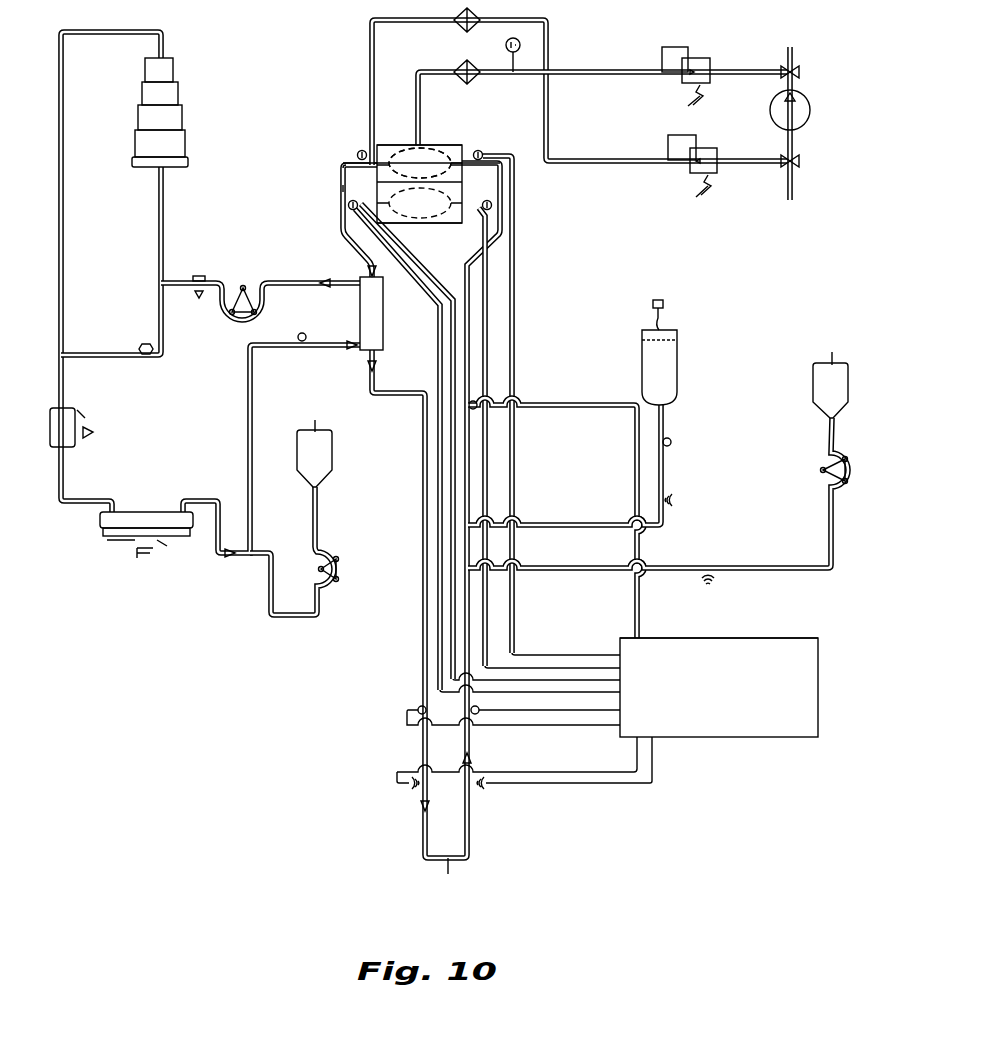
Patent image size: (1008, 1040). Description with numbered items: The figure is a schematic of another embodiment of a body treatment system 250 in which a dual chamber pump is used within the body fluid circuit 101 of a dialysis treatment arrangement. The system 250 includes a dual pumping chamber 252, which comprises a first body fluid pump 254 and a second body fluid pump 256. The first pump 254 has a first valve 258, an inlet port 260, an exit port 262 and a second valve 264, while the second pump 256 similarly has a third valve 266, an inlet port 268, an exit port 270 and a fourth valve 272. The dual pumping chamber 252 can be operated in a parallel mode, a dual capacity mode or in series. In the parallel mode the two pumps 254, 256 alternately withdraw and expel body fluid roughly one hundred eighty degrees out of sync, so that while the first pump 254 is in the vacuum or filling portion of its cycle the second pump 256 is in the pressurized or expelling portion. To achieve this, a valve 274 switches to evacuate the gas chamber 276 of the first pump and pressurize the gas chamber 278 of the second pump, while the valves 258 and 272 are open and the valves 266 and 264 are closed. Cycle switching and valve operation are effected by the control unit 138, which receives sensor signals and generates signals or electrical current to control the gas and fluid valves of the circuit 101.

The body fluid circuit 101 is at (555, 313).
The control unit 138 is at (739, 699).
The body treatment system 250 is at (288, 112).
The dual pumping chamber 252 is at (458, 180).
The first body fluid pump 254 is at (385, 145).
The second body fluid pump 256 is at (391, 225).
The first valve 258 is at (481, 151).
The inlet port 260 is at (468, 152).
The exit port 262 is at (342, 161).
The second valve 264 is at (359, 150).
The third valve 266 is at (493, 210).
The inlet port 268 is at (463, 258).
The exit port 270 is at (348, 206).
The fourth valve 272 is at (345, 188).
The valve 274 is at (548, 70).
The gas chamber 276 is at (450, 172).
The gas chamber 278 is at (352, 240).